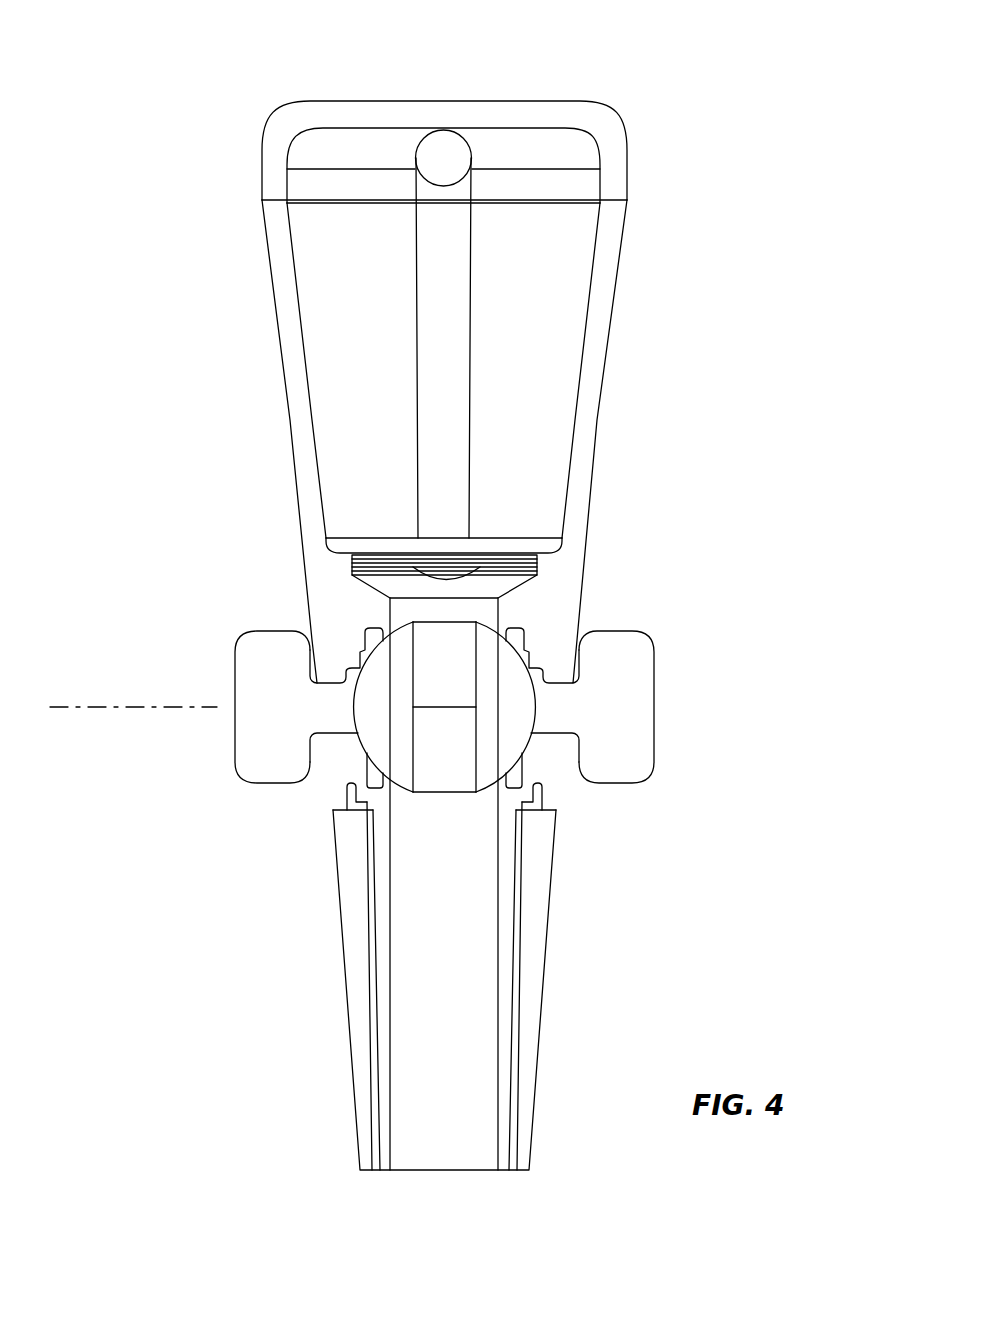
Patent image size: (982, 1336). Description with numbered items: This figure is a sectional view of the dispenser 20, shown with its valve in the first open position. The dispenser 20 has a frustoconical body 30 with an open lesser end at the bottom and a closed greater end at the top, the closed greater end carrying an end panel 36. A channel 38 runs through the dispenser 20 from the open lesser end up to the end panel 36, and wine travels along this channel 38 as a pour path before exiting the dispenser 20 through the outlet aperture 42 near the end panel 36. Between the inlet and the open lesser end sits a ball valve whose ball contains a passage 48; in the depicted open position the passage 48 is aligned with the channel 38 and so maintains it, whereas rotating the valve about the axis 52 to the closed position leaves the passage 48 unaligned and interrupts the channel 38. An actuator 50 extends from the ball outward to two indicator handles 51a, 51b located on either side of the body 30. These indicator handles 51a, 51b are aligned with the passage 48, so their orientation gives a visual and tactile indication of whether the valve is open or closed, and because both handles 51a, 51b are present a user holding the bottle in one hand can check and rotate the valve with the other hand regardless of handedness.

The dispenser 20 is at (661, 489).
The frustoconical body 30 is at (583, 565).
The end panel 36 is at (450, 100).
The channel 38 is at (492, 324).
The outlet aperture 42 is at (472, 153).
The passage 48 is at (445, 662).
The actuator 50 is at (333, 712).
The indicator handle 51a is at (260, 750).
The indicator handle 51b is at (632, 703).
The axis 52 is at (122, 707).